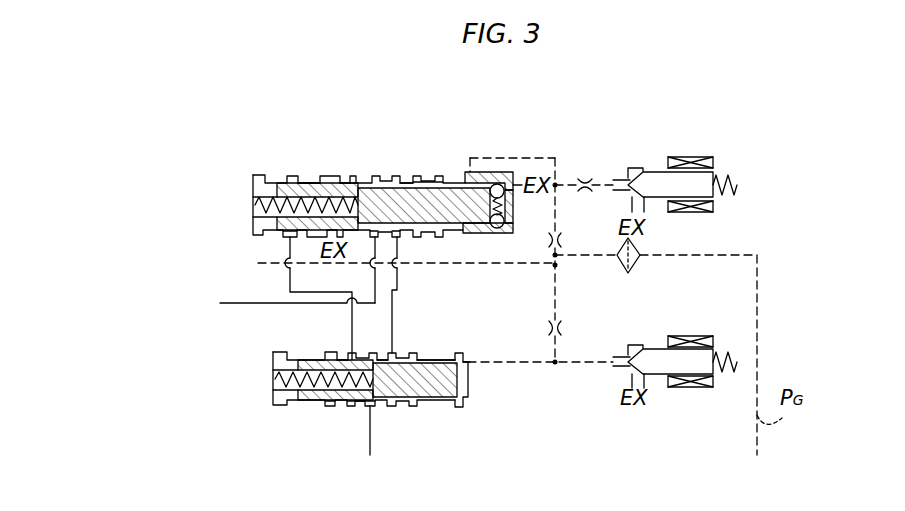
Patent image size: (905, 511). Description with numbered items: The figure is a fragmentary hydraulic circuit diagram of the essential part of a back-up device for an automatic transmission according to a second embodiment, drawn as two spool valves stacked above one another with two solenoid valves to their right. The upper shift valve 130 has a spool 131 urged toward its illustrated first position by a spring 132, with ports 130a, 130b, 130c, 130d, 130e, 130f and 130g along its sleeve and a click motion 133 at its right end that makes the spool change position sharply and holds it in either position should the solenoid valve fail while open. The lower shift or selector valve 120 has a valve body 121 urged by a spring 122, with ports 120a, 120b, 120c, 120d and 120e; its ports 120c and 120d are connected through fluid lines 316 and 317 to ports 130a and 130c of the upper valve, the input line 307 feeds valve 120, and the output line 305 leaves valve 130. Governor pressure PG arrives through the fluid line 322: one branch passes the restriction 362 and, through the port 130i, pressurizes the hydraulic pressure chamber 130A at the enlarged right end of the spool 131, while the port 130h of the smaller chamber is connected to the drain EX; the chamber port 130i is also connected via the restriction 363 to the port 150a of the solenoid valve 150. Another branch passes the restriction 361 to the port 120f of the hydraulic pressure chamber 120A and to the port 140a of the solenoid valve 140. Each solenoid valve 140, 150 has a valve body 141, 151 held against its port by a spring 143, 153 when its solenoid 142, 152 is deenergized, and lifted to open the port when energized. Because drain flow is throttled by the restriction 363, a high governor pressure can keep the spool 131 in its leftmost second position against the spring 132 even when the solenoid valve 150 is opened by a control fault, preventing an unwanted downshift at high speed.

The shift valve 130 is at (359, 216).
The spool 131 is at (424, 205).
The spring 132 is at (258, 200).
The click motion 133 is at (515, 235).
The hydraulic pressure chamber 130A is at (465, 233).
The port 130a is at (288, 235).
The port 130b is at (375, 237).
The port 130c is at (398, 235).
The port 130d is at (315, 182).
The port 130e is at (360, 182).
The port 130f is at (422, 177).
The port 130g is at (438, 177).
The port 130h is at (517, 180).
The port 130i is at (470, 178).
The shift valve 120 is at (478, 383).
The valve body 121 is at (415, 380).
The spring 122 is at (294, 361).
The hydraulic pressure chamber 120A is at (468, 398).
The port 120a is at (330, 406).
The port 120b is at (367, 406).
The port 120c is at (352, 358).
The port 120d is at (393, 358).
The port 120e is at (418, 358).
The port 120f is at (468, 360).
The output line 305 is at (263, 305).
The input line 307 is at (371, 455).
The fluid line 316 is at (290, 292).
The fluid line 317 is at (398, 270).
The fluid line 322 is at (648, 258).
The restriction 361 is at (583, 315).
The restriction 362 is at (560, 244).
The restriction 363 is at (585, 178).
The solenoid valve 140 is at (681, 327).
The port 140a is at (613, 366).
The valve body 141 is at (657, 357).
The solenoid 142 is at (680, 388).
The spring 143 is at (737, 358).
The solenoid valve 150 is at (683, 222).
The port 150a is at (613, 180).
The valve body 151 is at (655, 172).
The solenoid 152 is at (715, 165).
The spring 153 is at (737, 188).